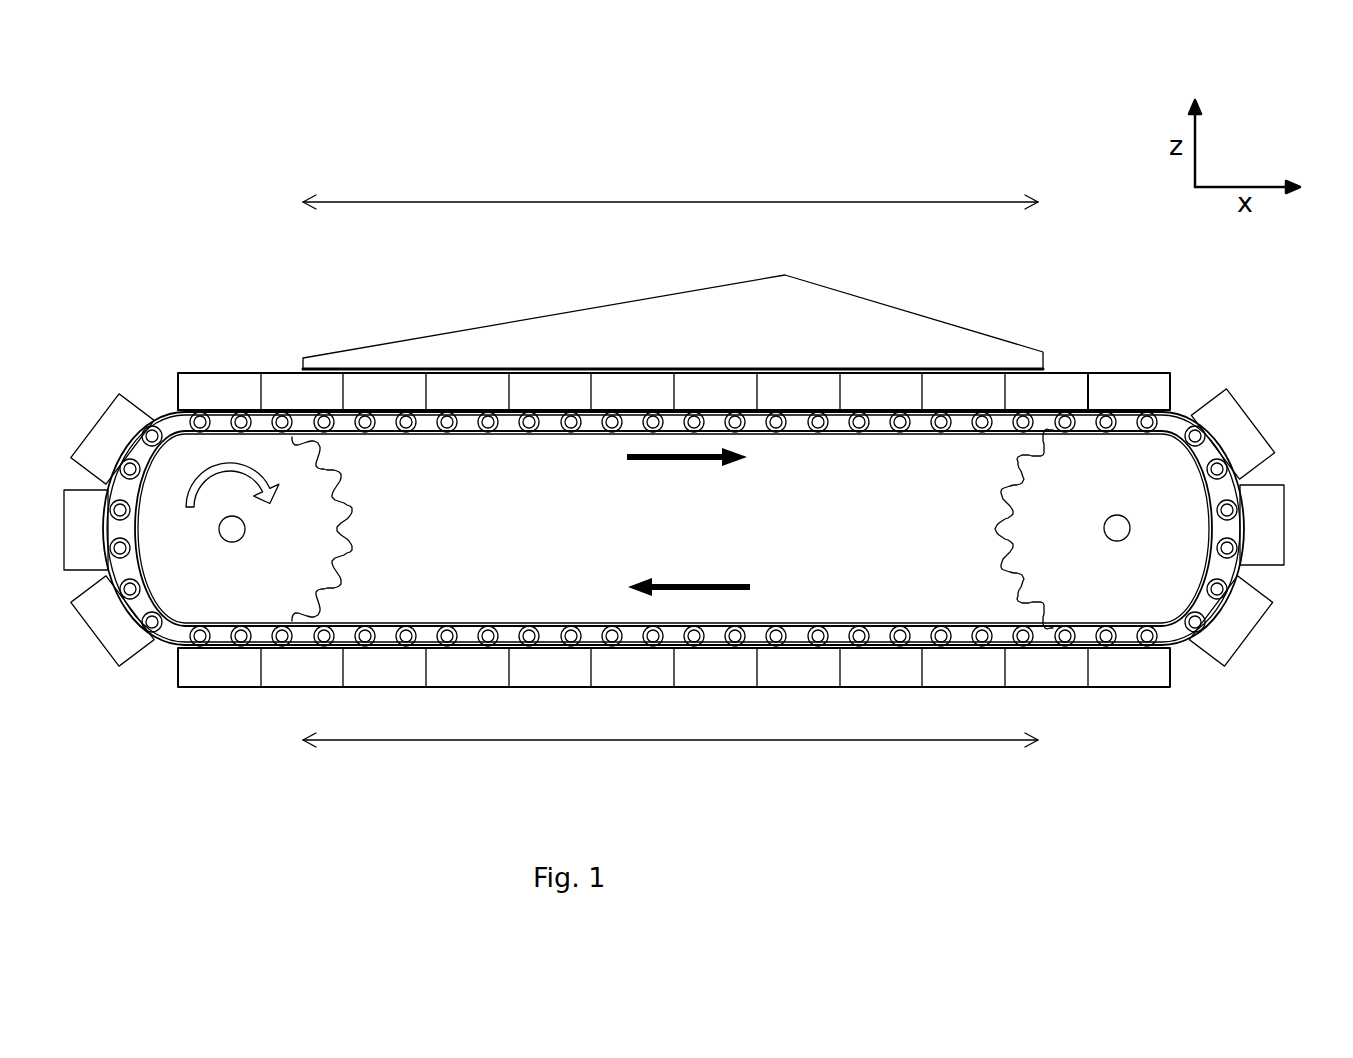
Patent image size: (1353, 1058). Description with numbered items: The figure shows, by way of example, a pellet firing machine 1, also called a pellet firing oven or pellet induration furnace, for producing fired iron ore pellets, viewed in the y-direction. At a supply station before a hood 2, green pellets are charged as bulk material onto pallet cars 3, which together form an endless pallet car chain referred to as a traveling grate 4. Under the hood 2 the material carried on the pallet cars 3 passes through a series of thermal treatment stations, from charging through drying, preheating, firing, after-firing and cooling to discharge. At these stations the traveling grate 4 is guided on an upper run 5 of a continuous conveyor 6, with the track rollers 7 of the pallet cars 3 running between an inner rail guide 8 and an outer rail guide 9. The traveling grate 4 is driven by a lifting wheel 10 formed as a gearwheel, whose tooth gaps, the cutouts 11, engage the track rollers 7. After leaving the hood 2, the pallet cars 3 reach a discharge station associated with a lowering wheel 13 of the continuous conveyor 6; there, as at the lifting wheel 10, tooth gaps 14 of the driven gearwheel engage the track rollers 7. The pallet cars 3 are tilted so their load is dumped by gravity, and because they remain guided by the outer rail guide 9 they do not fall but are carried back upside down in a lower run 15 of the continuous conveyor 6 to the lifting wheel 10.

The pellet firing machine 1 is at (998, 185).
The hood 2 is at (650, 333).
The pallet car 3 is at (1157, 388).
The traveling grate 4 is at (1090, 370).
The upper run 5 is at (670, 187).
The continuous conveyor 6 is at (1270, 410).
The track rollers 7 is at (1243, 513).
The inner rail guide 8 is at (1212, 488).
The outer rail guide 9 is at (1180, 643).
The lifting wheel 10 is at (290, 558).
The cutouts 11 is at (340, 487).
The lowering wheel 13 is at (1072, 555).
The tooth gaps 14 is at (1005, 525).
The lower run 15 is at (670, 760).